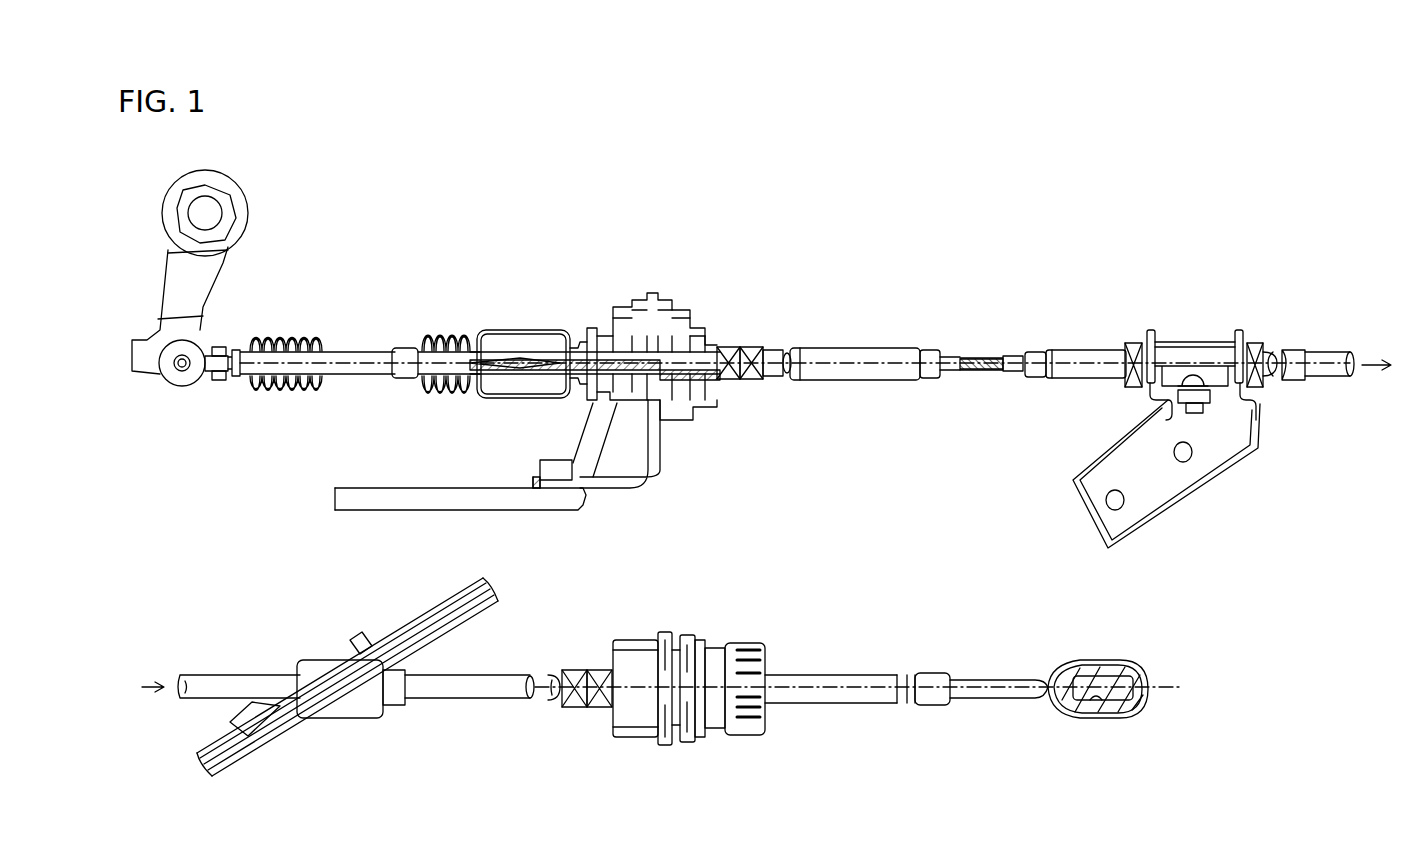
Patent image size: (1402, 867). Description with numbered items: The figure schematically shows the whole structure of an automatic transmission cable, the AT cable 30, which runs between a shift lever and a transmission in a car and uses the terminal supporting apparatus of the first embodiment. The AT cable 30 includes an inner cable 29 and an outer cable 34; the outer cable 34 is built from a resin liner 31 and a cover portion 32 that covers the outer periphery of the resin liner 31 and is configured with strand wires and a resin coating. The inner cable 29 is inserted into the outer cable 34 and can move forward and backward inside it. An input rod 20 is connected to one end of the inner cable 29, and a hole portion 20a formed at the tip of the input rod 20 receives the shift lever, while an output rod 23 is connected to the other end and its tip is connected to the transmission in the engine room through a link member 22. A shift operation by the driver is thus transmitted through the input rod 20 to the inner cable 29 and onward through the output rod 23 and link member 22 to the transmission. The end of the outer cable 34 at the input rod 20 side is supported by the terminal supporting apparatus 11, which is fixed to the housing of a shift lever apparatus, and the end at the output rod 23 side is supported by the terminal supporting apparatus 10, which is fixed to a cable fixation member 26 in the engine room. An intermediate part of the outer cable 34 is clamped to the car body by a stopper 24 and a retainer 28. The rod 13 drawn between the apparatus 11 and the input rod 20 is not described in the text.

The terminal supporting apparatus 10 is at (677, 283).
The terminal supporting apparatus 11 is at (697, 625).
The control cable rod 13 is at (841, 685).
The input rod 20 is at (1049, 697).
The hole portion 20a is at (1097, 712).
The link member 22 is at (222, 185).
The output rod 23 is at (250, 372).
The stopper 24 is at (1190, 346).
The cable fixation member 26 is at (443, 495).
The retainer 28 is at (318, 660).
The inner cable 29 is at (999, 355).
The AT cable 30 is at (1059, 256).
The resin liner 31 is at (1014, 355).
The cover portion 32 is at (1040, 352).
The outer cable 34 is at (1075, 291).